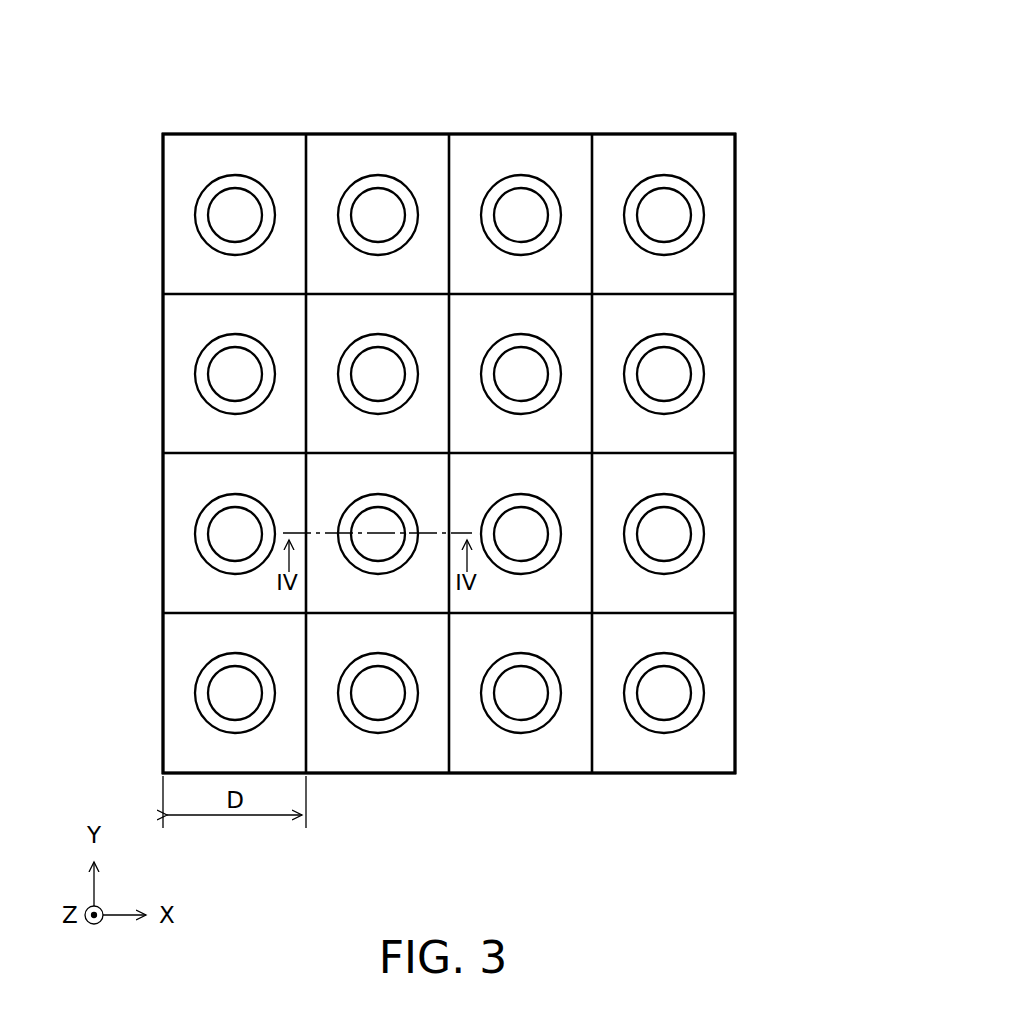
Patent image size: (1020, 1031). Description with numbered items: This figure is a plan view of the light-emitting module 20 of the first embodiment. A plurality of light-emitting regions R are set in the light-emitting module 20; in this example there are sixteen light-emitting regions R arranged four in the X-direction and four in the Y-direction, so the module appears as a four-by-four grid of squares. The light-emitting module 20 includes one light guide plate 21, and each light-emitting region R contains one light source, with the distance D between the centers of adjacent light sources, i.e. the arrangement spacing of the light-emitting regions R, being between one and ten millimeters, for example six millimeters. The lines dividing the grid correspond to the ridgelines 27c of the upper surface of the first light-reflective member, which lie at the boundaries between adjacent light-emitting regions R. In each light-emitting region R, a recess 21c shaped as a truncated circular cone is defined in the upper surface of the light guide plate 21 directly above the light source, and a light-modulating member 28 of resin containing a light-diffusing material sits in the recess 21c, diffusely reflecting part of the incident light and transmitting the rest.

The light-emitting module 20 is at (735, 68).
The light guide plate 21 is at (707, 752).
The recess 21c is at (217, 188).
The ridgelines 27c is at (696, 292).
The light-modulating member 28 is at (223, 213).
The light-emitting region R is at (235, 147).